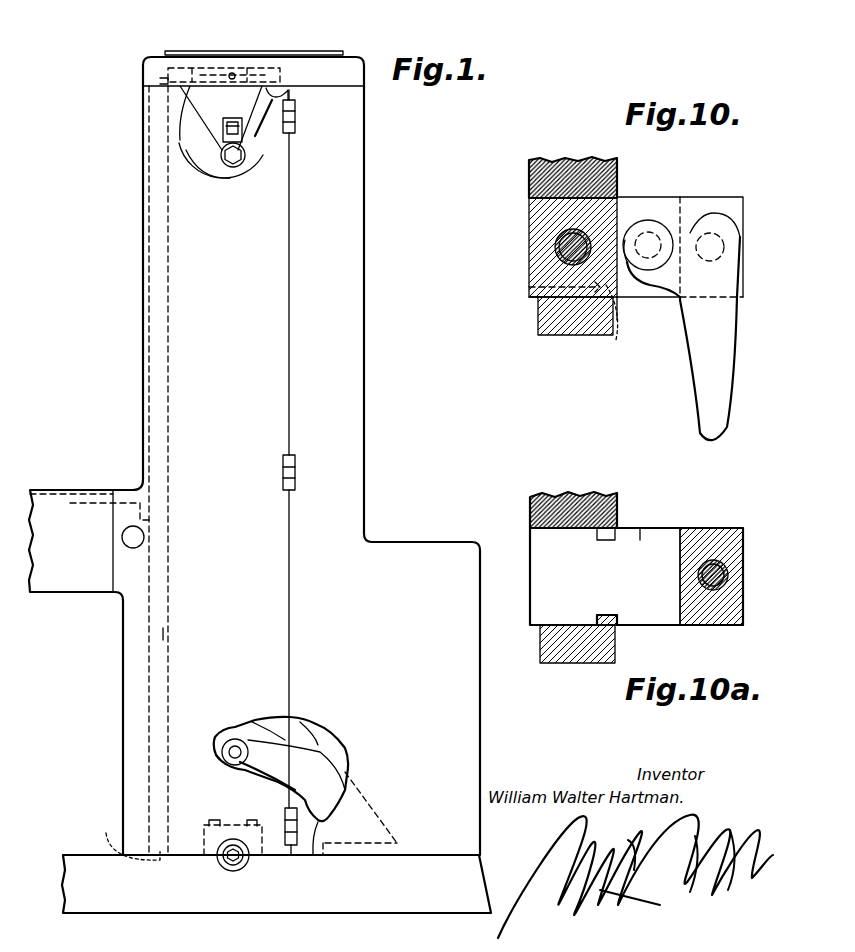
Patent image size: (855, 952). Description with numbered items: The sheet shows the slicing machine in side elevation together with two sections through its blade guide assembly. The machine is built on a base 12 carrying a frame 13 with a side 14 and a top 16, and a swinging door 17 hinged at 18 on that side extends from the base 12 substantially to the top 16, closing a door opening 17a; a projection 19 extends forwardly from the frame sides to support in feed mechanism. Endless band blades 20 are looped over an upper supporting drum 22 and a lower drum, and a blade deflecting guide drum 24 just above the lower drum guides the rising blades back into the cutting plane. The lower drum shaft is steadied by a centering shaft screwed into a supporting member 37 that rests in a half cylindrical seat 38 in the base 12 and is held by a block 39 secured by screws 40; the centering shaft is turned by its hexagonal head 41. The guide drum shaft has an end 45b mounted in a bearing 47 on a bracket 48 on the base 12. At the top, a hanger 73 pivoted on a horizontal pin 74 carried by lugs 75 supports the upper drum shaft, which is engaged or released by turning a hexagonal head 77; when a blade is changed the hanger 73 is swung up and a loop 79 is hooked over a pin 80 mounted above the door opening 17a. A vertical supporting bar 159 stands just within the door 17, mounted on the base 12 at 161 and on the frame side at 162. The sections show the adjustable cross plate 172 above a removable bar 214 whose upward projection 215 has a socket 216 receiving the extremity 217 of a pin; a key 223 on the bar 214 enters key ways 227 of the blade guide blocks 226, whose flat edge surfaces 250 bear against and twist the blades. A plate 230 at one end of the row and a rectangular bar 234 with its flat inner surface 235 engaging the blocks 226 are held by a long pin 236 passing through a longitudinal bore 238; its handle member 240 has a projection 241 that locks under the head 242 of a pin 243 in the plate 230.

In FIG. 1, the base 12 is at (390, 900).
In FIG. 1, the frame 13 is at (369, 175).
In FIG. 1, the frame side 14 is at (345, 284).
In FIG. 1, the top 16 is at (220, 52).
In FIG. 1, the swinging door 17 is at (195, 250).
In FIG. 1, the door opening 17a is at (276, 92).
In FIG. 1, the hinge 18 is at (295, 116).
In FIG. 1, the projection 19 is at (47, 500).
In FIG. 1, the endless band blade 20 is at (180, 150).
In FIG. 1, the upper band blade supporting drum 22 is at (200, 160).
In FIG. 1, the blade deflecting guide drum 24 is at (285, 725).
In FIG. 1, the supporting member 37 is at (246, 858).
In FIG. 1, the half cylindrical seat 38 is at (228, 866).
In FIG. 1, the block 39 is at (246, 822).
In FIG. 1, the screws 40 is at (212, 822).
In FIG. 1, the hexagonal head 41 is at (240, 864).
In FIG. 1, the shaft end 45b is at (235, 745).
In FIG. 1, the bearing 47 is at (237, 746).
In FIG. 1, the bracket 48 is at (318, 745).
In FIG. 1, the hanger 73 is at (197, 103).
In FIG. 1, the horizontal pin 74 is at (233, 68).
In FIG. 1, the lugs 75 is at (168, 52).
In FIG. 1, the hexagonal head 77 is at (240, 168).
In FIG. 1, the loop 79 is at (246, 142).
In FIG. 1, the pin 80 is at (235, 72).
In FIG. 1, the vertical supporting bar 159 is at (163, 634).
In FIG. 1, the lower bar mounting 161 is at (117, 840).
In FIG. 1, the upper bar mounting 162 is at (168, 80).
In FIG. 10, the cross plate 172 is at (548, 176).
In FIG. 10A, the cross plate 172 is at (530, 500).
In FIG. 10, the bar 214 is at (550, 318).
In FIG. 10A, the bar 214 is at (568, 655).
In FIG. 10, the upward projection 215 is at (548, 222).
In FIG. 10, the socket 216 is at (560, 245).
In FIG. 10, the pin extremity 217 is at (555, 257).
In FIG. 10, the key 223 is at (616, 340).
In FIG. 10A, the key 223 is at (625, 620).
In FIG. 10A, the blade guide block 226 is at (548, 547).
In FIG. 10, the key way 227 is at (530, 287).
In FIG. 10A, the key way 227 is at (607, 535).
In FIG. 10, the plate 230 is at (640, 208).
In FIG. 10, the bar 234 is at (713, 200).
In FIG. 10A, the bar 234 is at (710, 535).
In FIG. 10A, the flat inner surface 235 is at (645, 553).
In FIG. 10, the long pin 236 is at (722, 236).
In FIG. 10A, the long pin 236 is at (720, 572).
In FIG. 10A, the longitudinal bore 238 is at (715, 590).
In FIG. 10, the handle member 240 is at (720, 347).
In FIG. 10, the projection 241 is at (660, 290).
In FIG. 10, the pin head 242 is at (650, 232).
In FIG. 10, the pin 243 is at (693, 215).
In FIG. 10A, the flat edge surface 250 is at (680, 553).